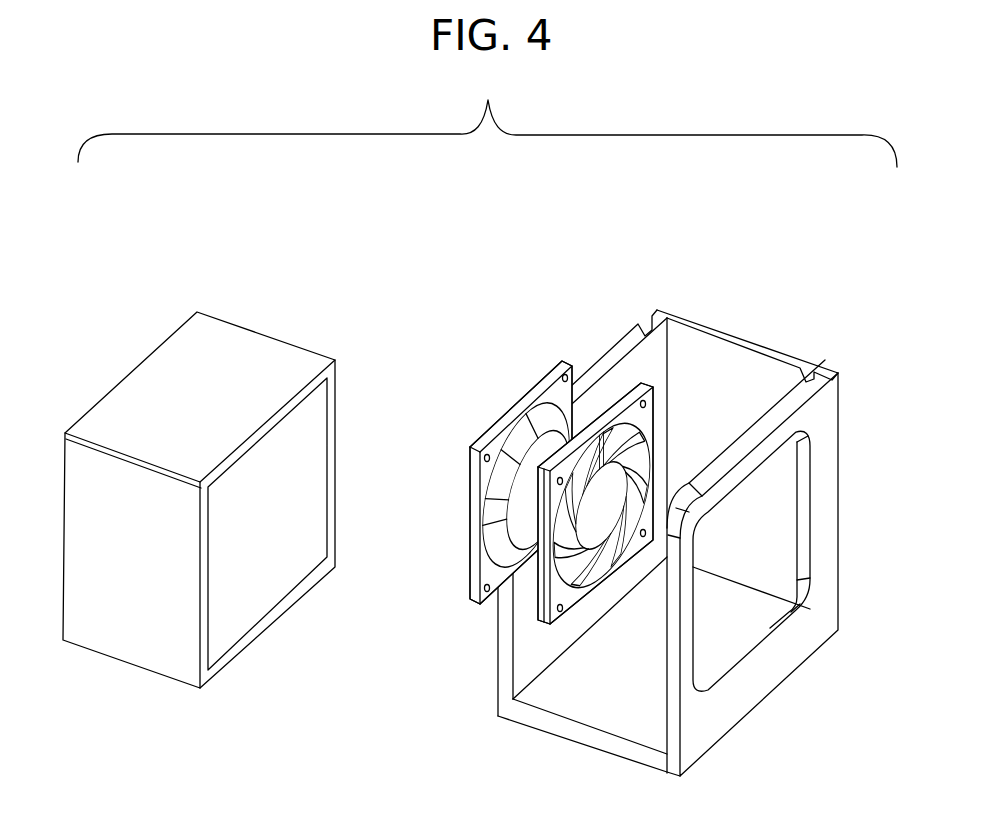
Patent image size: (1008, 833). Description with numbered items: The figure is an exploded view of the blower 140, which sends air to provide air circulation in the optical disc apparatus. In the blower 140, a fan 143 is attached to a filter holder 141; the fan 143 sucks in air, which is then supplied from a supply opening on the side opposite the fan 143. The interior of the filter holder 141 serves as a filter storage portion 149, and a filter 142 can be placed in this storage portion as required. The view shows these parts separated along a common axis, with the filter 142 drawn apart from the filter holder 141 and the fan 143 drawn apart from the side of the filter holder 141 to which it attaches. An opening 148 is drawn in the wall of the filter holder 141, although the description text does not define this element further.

The blower 140 is at (752, 258).
The filter holder 141 is at (680, 549).
The filter 142 is at (270, 332).
The fan 143 is at (558, 364).
The air outlet window 148 is at (772, 500).
The filter storage portion 149 is at (578, 686).